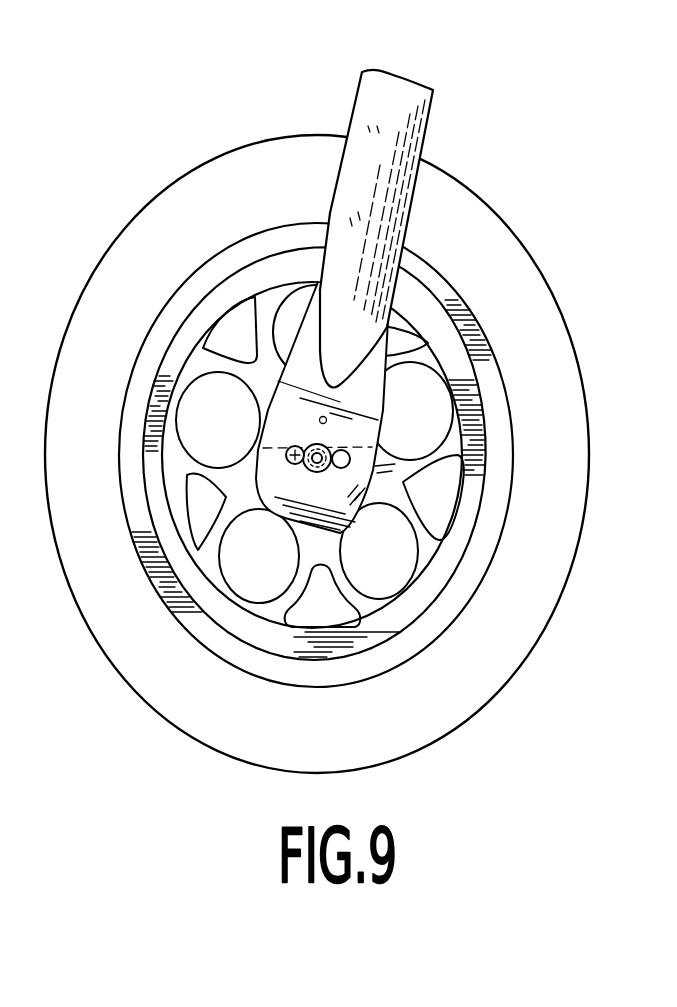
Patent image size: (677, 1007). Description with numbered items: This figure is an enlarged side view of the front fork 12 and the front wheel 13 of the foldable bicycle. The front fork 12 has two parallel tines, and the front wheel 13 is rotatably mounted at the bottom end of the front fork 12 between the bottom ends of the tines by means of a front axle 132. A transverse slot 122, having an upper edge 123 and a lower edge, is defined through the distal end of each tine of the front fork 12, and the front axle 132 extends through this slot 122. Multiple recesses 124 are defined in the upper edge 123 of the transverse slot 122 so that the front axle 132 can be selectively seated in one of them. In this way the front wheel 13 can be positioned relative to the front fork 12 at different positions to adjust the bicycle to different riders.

The front fork 12 is at (333, 106).
The front wheel 13 is at (567, 398).
The transverse slot 122 is at (284, 462).
The upper edge 123 is at (285, 451).
The recesses 124 is at (282, 437).
The front axle 132 is at (350, 452).